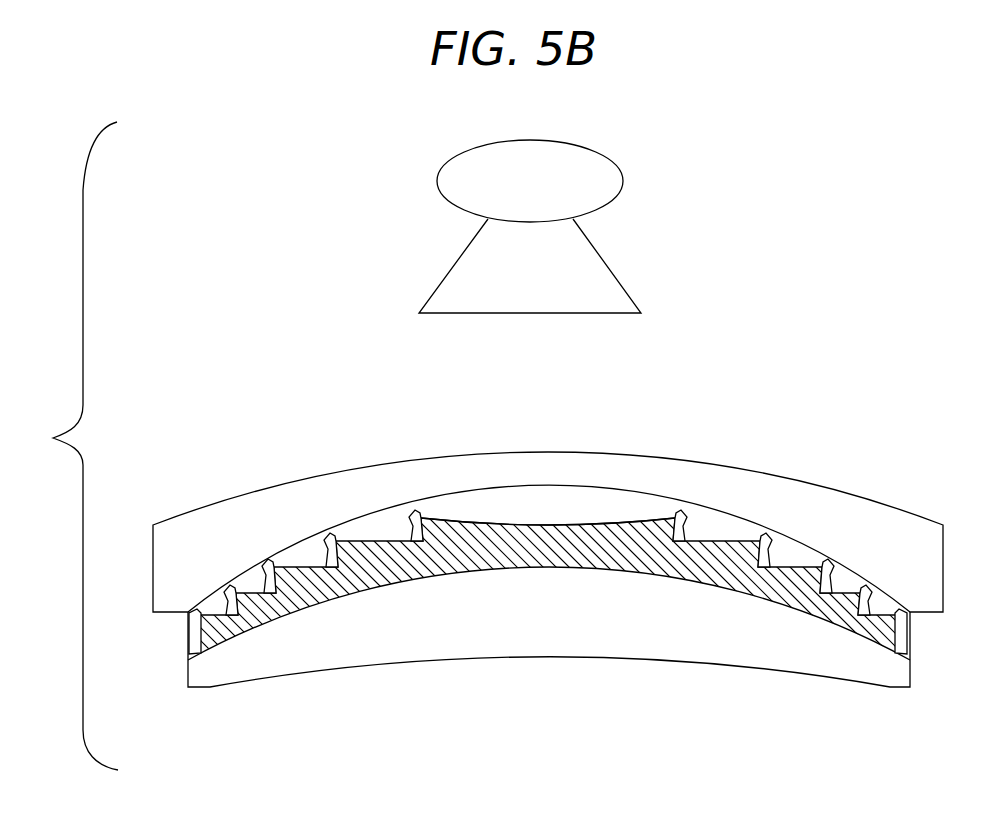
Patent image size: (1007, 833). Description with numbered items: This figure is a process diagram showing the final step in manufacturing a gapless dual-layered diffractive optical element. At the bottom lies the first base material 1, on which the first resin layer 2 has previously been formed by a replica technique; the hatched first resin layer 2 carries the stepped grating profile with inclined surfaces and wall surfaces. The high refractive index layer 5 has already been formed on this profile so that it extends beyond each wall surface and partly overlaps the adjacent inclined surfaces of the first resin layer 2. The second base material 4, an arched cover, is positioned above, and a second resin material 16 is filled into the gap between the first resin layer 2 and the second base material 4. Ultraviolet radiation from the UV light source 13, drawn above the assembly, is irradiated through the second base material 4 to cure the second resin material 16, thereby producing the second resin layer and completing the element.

The first base material 1 is at (610, 648).
The first resin layer 2 is at (804, 600).
The second base material 4 is at (676, 470).
The high refractive index layer 5 is at (777, 545).
The UV light source 13 is at (607, 172).
The second resin material 16 is at (561, 503).